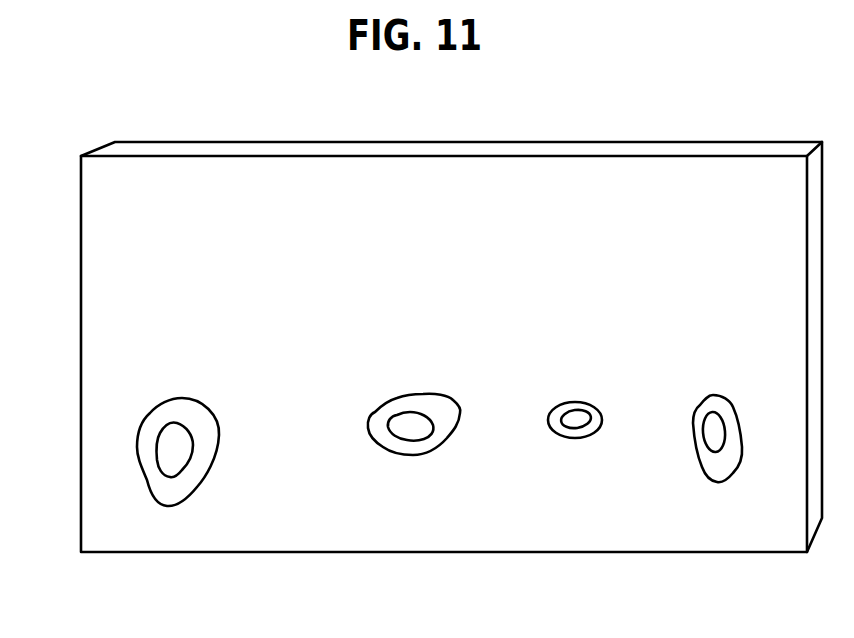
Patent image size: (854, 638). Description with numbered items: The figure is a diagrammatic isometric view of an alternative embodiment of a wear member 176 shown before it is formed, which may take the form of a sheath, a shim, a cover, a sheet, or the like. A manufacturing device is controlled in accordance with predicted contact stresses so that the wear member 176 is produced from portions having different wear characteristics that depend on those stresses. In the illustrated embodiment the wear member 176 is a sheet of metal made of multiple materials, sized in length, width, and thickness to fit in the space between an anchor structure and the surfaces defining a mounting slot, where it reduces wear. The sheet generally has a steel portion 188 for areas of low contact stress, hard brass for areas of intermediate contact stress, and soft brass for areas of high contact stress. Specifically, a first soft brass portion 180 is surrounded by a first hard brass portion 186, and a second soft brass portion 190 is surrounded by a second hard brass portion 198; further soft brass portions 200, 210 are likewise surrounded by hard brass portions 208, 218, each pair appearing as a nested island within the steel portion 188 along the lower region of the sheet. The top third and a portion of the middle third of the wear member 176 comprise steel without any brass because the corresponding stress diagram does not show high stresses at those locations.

The wear member 176 is at (107, 112).
The first soft brass portion 180 is at (168, 445).
The first hard brass portion 186 is at (168, 486).
The steel portion 188 is at (269, 460).
The second soft brass portion 190 is at (400, 430).
The second hard brass portion 198 is at (407, 448).
The soft brass portion 200 is at (571, 420).
The hard brass portion 208 is at (590, 428).
The soft brass portion 210 is at (712, 437).
The hard brass portion 218 is at (733, 457).